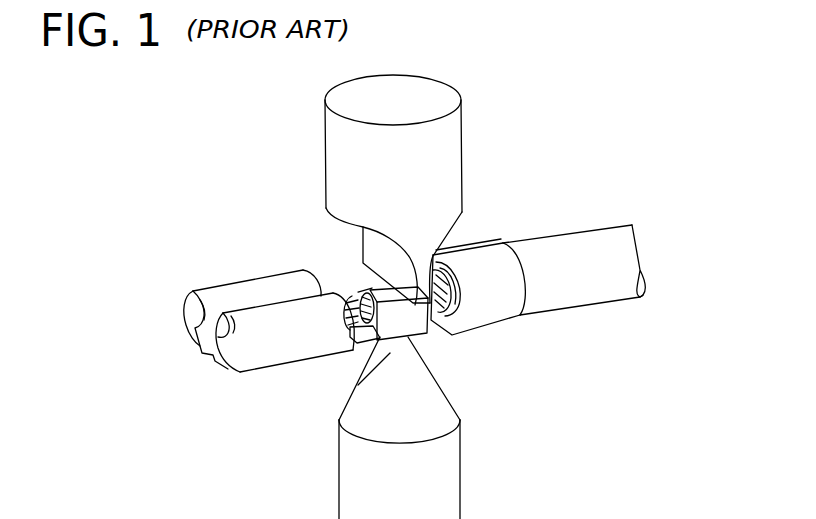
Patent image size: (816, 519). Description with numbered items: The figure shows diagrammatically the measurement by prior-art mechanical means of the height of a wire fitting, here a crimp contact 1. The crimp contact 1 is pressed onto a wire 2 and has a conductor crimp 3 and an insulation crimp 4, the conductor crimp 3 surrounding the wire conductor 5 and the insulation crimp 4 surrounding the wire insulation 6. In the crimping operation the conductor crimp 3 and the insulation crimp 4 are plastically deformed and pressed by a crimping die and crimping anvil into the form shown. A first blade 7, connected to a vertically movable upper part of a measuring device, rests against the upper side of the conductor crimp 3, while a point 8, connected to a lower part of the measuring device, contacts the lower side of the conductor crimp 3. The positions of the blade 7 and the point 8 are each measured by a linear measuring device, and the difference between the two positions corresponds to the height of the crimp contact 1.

The crimp contact 1 is at (222, 300).
The wire 2 is at (573, 278).
The conductor crimp 3 is at (432, 335).
The insulation crimp 4 is at (500, 310).
The wire conductor 5 is at (350, 298).
The wire insulation 6 is at (593, 250).
The first blade 7 is at (397, 268).
The point 8 is at (356, 385).